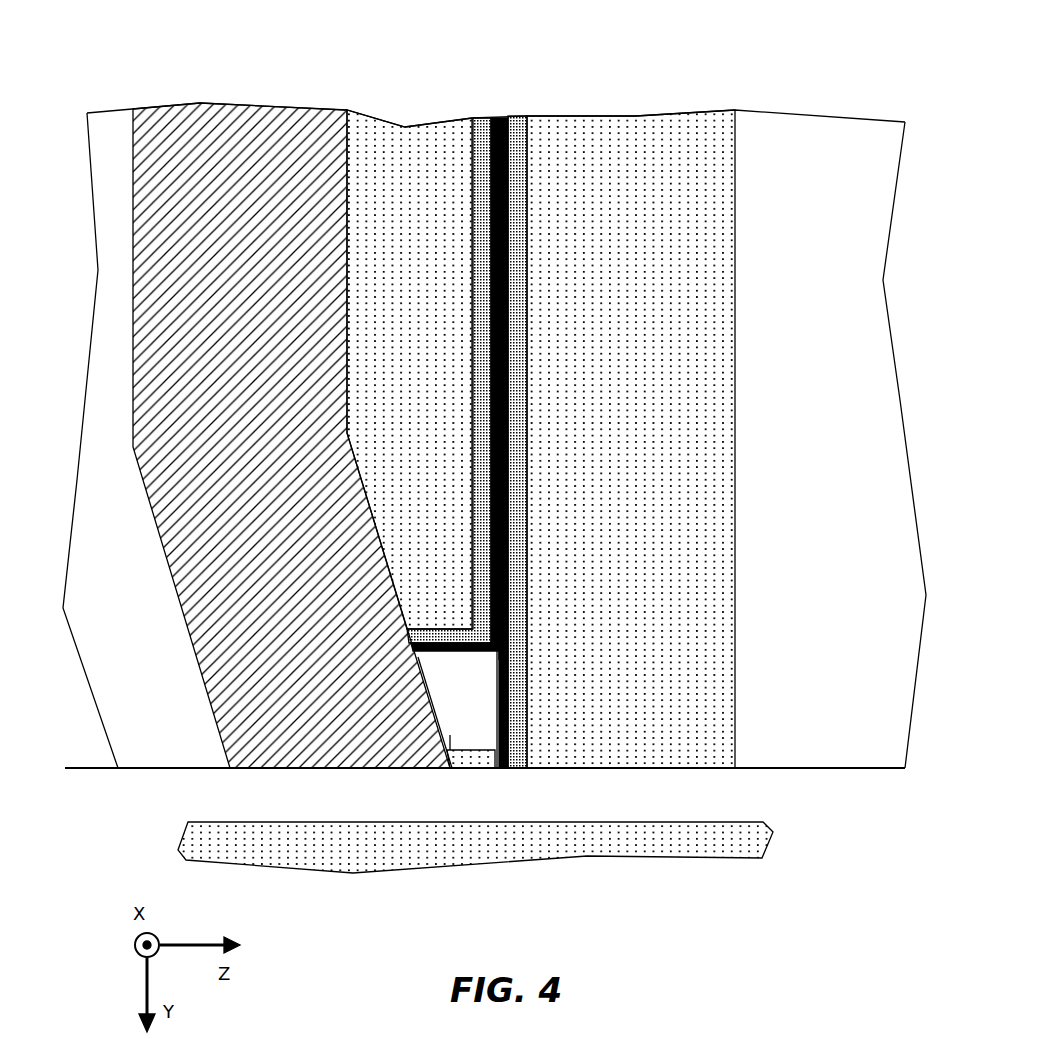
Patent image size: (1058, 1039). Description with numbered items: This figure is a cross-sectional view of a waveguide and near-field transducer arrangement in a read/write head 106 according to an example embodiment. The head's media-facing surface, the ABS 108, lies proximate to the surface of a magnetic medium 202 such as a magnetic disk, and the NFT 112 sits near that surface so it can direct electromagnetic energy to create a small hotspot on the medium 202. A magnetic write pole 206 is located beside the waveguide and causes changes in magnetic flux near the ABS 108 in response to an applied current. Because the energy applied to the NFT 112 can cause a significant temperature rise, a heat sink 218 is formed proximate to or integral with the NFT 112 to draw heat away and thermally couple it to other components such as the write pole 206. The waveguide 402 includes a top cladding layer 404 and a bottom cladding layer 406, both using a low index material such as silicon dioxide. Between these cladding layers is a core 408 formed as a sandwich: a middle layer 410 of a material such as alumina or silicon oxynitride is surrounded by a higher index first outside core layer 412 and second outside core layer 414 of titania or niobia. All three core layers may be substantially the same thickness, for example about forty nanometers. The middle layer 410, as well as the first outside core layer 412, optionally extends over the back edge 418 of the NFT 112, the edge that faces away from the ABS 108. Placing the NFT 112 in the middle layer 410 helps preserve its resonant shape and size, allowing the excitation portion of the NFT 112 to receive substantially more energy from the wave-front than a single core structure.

The read/write head 106 is at (806, 50).
The ABS 108 is at (80, 770).
The NFT 112 is at (496, 768).
The magnetic medium 202 is at (247, 845).
The magnetic write pole 206 is at (268, 104).
The heat sink 218 is at (447, 760).
The waveguide 402 is at (543, 385).
The top cladding layer 404 is at (438, 121).
The bottom cladding layer 406 is at (631, 430).
The core 408 is at (505, 404).
The middle layer 410 is at (498, 118).
The first outside core layer 412 is at (483, 118).
The second outside core layer 414 is at (517, 118).
The back edge 418 is at (506, 650).